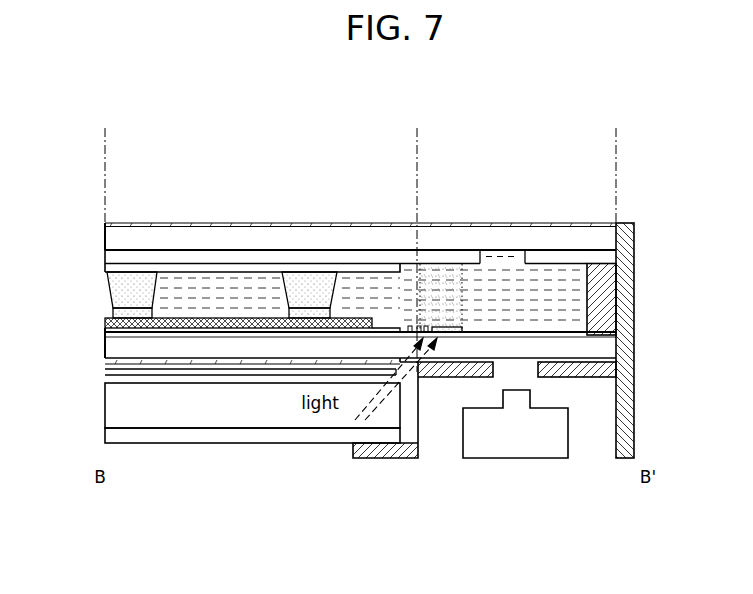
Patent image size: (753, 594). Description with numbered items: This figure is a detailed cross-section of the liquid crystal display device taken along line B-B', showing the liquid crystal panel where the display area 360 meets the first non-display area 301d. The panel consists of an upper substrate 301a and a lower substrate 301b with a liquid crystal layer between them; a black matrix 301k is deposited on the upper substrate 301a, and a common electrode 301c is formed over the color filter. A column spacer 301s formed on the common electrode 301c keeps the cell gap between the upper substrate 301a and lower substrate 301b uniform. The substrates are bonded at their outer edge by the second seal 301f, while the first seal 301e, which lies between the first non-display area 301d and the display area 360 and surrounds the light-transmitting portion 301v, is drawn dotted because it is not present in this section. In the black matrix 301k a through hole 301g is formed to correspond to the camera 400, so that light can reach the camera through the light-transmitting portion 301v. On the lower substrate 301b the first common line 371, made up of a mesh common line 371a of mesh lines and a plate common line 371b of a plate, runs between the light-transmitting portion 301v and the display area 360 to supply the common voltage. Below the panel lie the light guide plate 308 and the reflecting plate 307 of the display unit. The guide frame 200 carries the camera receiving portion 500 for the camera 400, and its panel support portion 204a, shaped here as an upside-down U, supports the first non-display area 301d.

The display area 360 is at (417, 138).
The first non-display area 301d is at (417, 138).
The upper substrate 301a is at (205, 249).
The black matrix 301k is at (258, 262).
The common electrode 301c is at (315, 269).
The first seal 301e is at (445, 295).
The through hole 301g is at (503, 260).
The column spacer 301s is at (125, 288).
The lower substrate 301b is at (122, 348).
The light-transmitting portion 301v is at (600, 353).
The light guide plate 308 is at (121, 413).
The reflecting plate 307 is at (120, 436).
The guide frame 200 is at (636, 250).
The second seal 301f is at (603, 307).
The panel support portion 204a is at (580, 382).
The first common line 371 is at (404, 439).
The mesh common line 371a is at (407, 331).
The plate common line 371b is at (456, 341).
The camera 400 is at (495, 442).
The camera receiving portion 500 is at (588, 442).